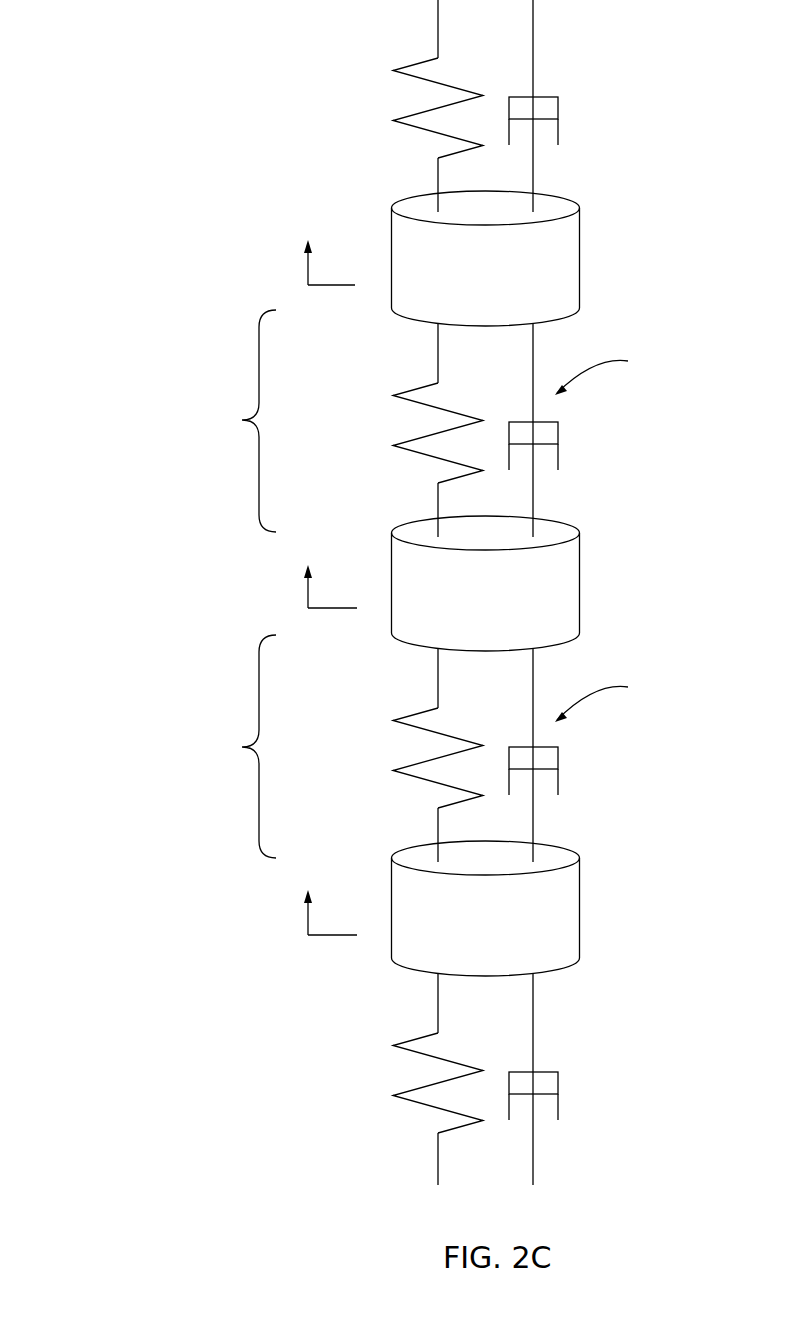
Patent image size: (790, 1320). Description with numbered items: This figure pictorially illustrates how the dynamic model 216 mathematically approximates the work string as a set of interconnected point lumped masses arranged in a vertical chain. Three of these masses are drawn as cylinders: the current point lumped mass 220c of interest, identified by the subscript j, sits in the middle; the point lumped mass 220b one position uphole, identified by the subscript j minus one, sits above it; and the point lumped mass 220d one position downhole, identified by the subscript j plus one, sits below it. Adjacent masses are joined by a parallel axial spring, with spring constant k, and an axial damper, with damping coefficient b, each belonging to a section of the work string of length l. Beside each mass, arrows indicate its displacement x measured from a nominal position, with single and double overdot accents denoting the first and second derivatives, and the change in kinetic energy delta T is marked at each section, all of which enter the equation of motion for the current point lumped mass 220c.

The dynamic model 216 is at (140, 40).
The point lumped mass 220b is at (581, 228).
The point lumped mass 220c is at (579, 553).
The point lumped mass 220d is at (581, 880).